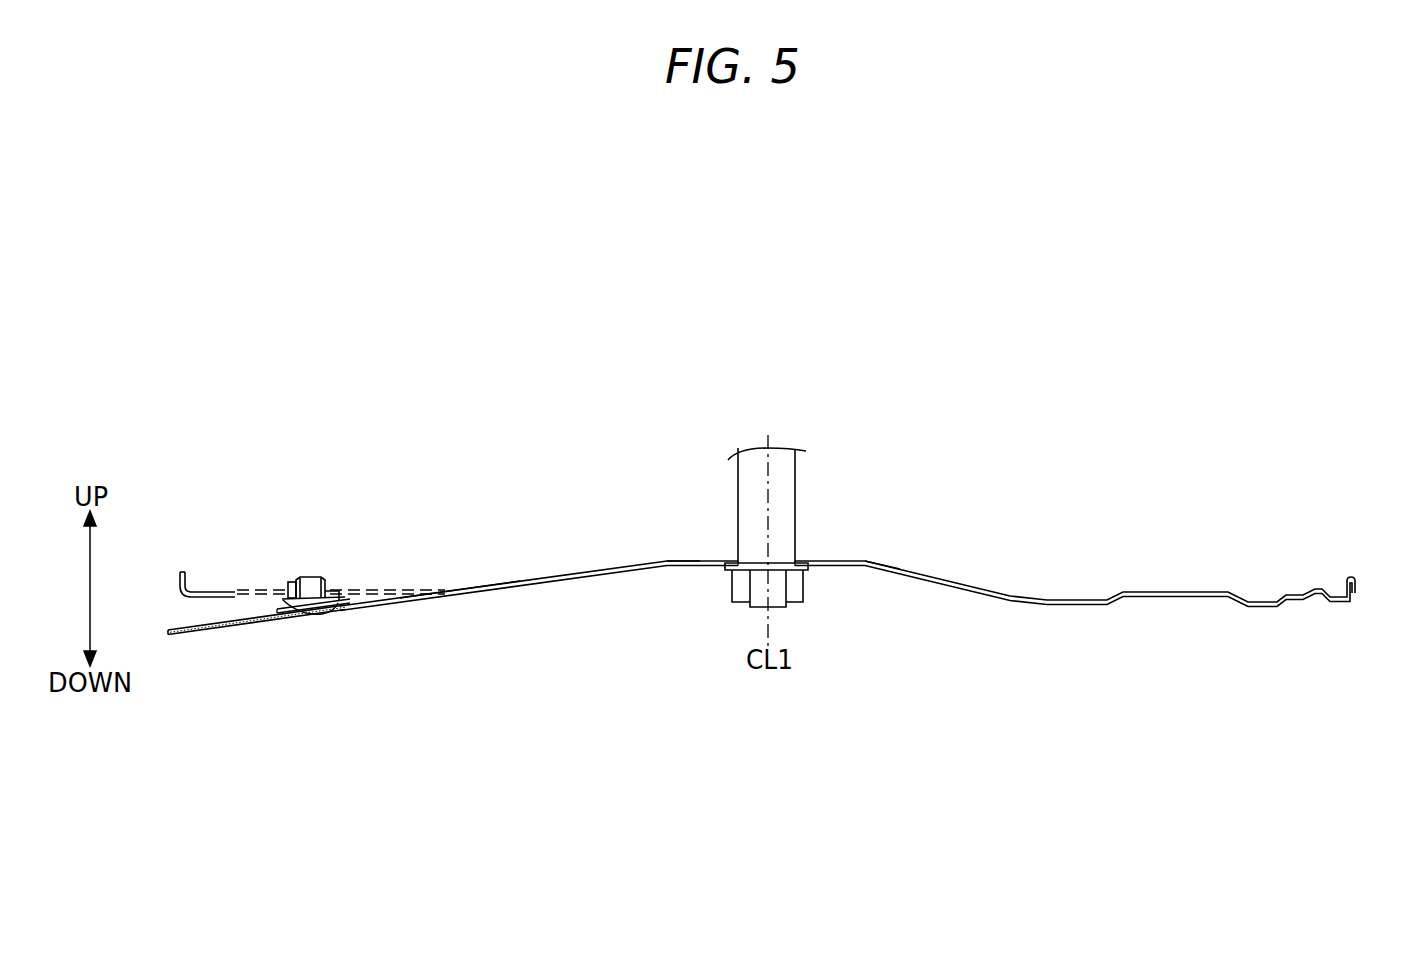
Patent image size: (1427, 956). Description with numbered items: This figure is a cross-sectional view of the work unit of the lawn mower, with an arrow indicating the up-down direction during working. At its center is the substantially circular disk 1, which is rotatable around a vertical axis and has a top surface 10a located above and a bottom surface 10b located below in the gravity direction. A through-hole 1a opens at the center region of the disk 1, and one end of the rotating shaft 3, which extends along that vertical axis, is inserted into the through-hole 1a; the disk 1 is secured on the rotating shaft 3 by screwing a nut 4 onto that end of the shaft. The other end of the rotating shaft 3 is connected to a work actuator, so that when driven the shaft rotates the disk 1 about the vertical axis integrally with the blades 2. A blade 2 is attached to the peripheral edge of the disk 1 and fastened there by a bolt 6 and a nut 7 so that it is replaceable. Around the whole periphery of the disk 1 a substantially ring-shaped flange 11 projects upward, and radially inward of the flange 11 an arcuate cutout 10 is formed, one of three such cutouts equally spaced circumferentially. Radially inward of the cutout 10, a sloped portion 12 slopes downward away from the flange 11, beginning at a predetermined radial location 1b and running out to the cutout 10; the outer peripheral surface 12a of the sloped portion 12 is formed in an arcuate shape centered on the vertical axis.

The disk 1 is at (1195, 588).
The through-hole 1a is at (750, 566).
The predetermined radial locations 1b is at (449, 589).
The blades 2 is at (226, 630).
The rotating shaft 3 is at (797, 483).
The nut 4 is at (805, 584).
The bolt 6 is at (318, 615).
The nut 7 is at (328, 577).
The cutout 10 is at (228, 590).
The top surface 10a is at (852, 561).
The bottom surface 10b is at (690, 567).
The flange 11 is at (180, 582).
The sloped portion 12 is at (392, 589).
The outer peripheral surface 12a is at (275, 626).